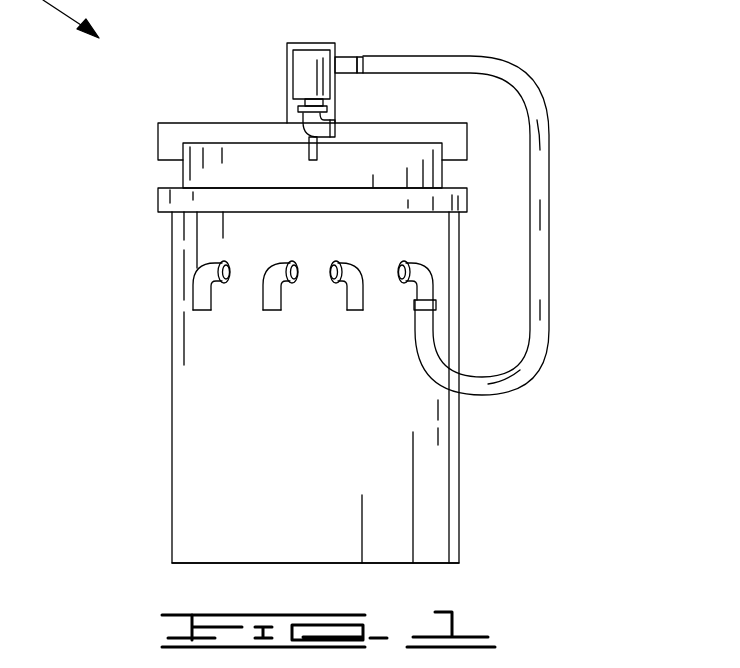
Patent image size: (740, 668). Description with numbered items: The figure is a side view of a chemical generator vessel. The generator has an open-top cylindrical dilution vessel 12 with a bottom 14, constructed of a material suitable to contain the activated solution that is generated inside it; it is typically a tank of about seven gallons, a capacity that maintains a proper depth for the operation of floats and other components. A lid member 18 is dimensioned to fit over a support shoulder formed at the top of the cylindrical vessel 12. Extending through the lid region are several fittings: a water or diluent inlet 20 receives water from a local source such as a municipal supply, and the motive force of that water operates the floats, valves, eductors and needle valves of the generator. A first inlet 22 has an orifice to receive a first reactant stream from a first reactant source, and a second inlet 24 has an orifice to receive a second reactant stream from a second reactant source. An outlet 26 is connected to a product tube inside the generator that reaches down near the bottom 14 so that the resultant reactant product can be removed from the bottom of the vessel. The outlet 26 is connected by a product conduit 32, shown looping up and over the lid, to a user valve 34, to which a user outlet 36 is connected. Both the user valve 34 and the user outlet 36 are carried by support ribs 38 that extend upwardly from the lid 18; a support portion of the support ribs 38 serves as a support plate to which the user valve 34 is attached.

The dilution vessel 12 is at (462, 452).
The bottom 14 is at (238, 563).
The lid member 18 is at (183, 175).
The water inlet 20 is at (363, 297).
The first inlet 22 is at (192, 290).
The second inlet 24 is at (263, 283).
The outlet 26 is at (428, 268).
The product conduit 32 is at (547, 183).
The user valve 34 is at (302, 67).
The user outlet 36 is at (337, 135).
The support ribs 38 is at (188, 130).